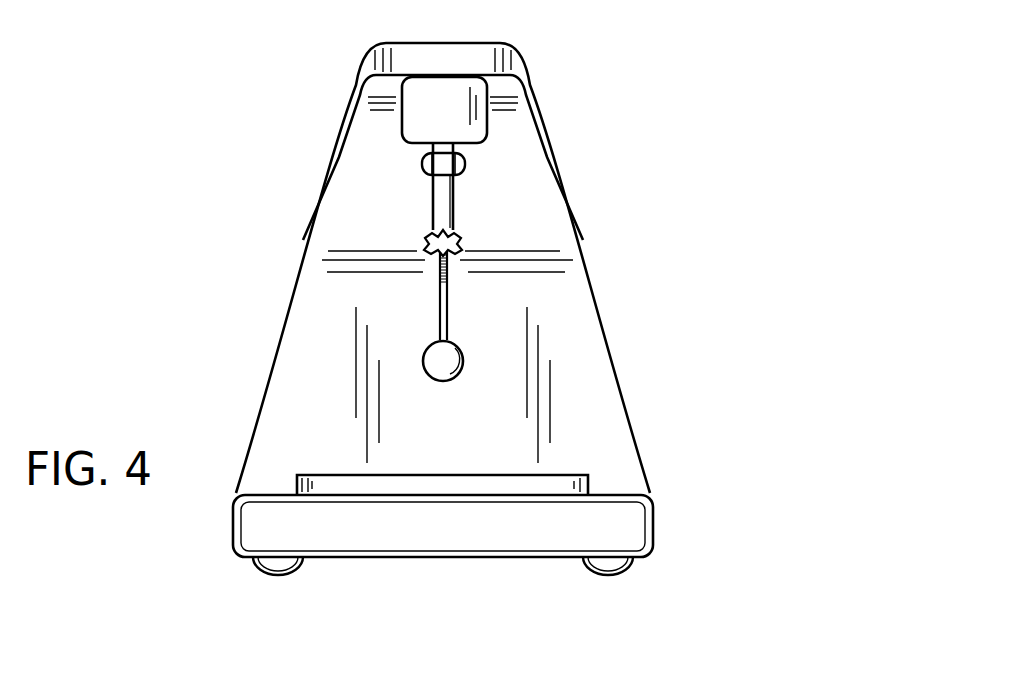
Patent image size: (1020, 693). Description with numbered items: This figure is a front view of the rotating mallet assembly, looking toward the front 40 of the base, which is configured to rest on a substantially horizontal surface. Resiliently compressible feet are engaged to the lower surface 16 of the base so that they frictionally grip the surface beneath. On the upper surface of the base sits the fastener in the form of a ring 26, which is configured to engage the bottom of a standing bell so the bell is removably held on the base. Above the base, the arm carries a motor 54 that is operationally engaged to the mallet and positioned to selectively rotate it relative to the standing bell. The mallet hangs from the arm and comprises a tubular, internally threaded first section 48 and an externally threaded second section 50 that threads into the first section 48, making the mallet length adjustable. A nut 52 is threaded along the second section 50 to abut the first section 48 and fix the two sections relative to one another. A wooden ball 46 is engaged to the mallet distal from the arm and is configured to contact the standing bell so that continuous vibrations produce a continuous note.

The lower surface 16 is at (442, 557).
The ring 26 is at (583, 477).
The front 40 is at (540, 533).
The ball 46 is at (455, 362).
The first section 48 is at (447, 195).
The second section 50 is at (443, 302).
The nut 52 is at (462, 240).
The motor 54 is at (460, 95).